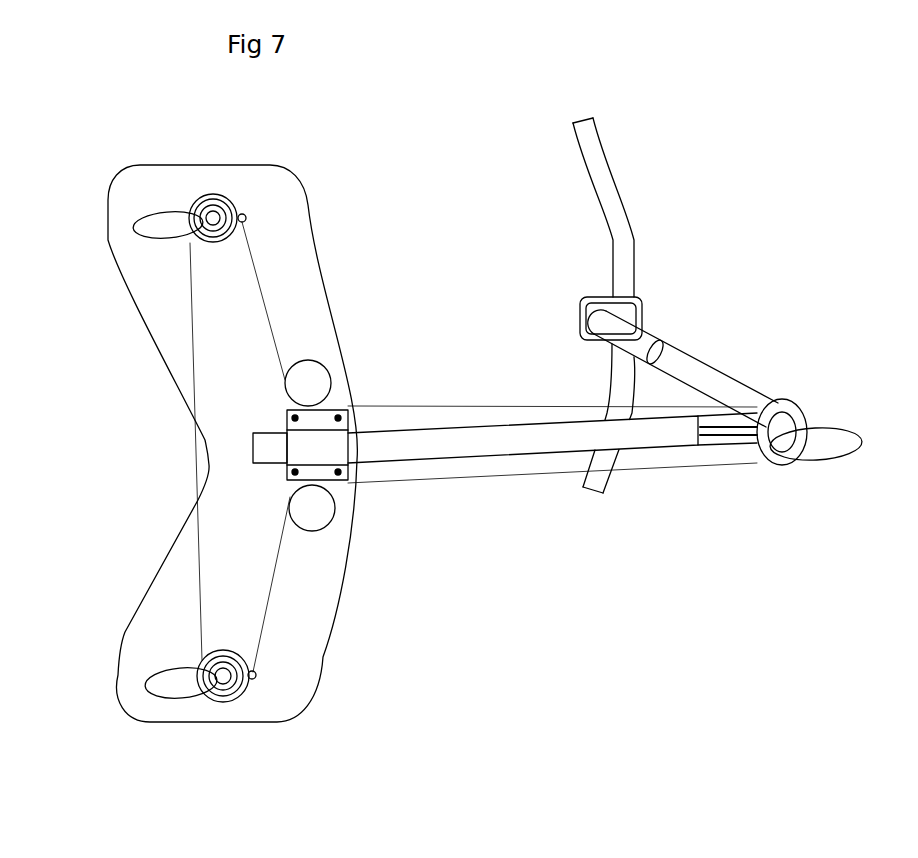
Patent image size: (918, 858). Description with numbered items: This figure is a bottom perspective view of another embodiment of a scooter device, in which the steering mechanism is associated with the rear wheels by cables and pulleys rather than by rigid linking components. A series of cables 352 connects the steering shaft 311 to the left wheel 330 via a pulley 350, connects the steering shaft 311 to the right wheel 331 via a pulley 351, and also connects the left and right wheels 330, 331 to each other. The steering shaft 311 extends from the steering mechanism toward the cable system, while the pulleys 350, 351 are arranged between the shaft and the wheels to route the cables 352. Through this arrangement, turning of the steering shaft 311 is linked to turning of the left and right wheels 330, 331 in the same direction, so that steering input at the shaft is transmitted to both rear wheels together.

The steering shaft 311 is at (720, 384).
The left wheel 330 is at (163, 688).
The right wheel 331 is at (145, 225).
The pulley 350 is at (318, 376).
The pulley 351 is at (326, 516).
The cables 352 is at (513, 478).